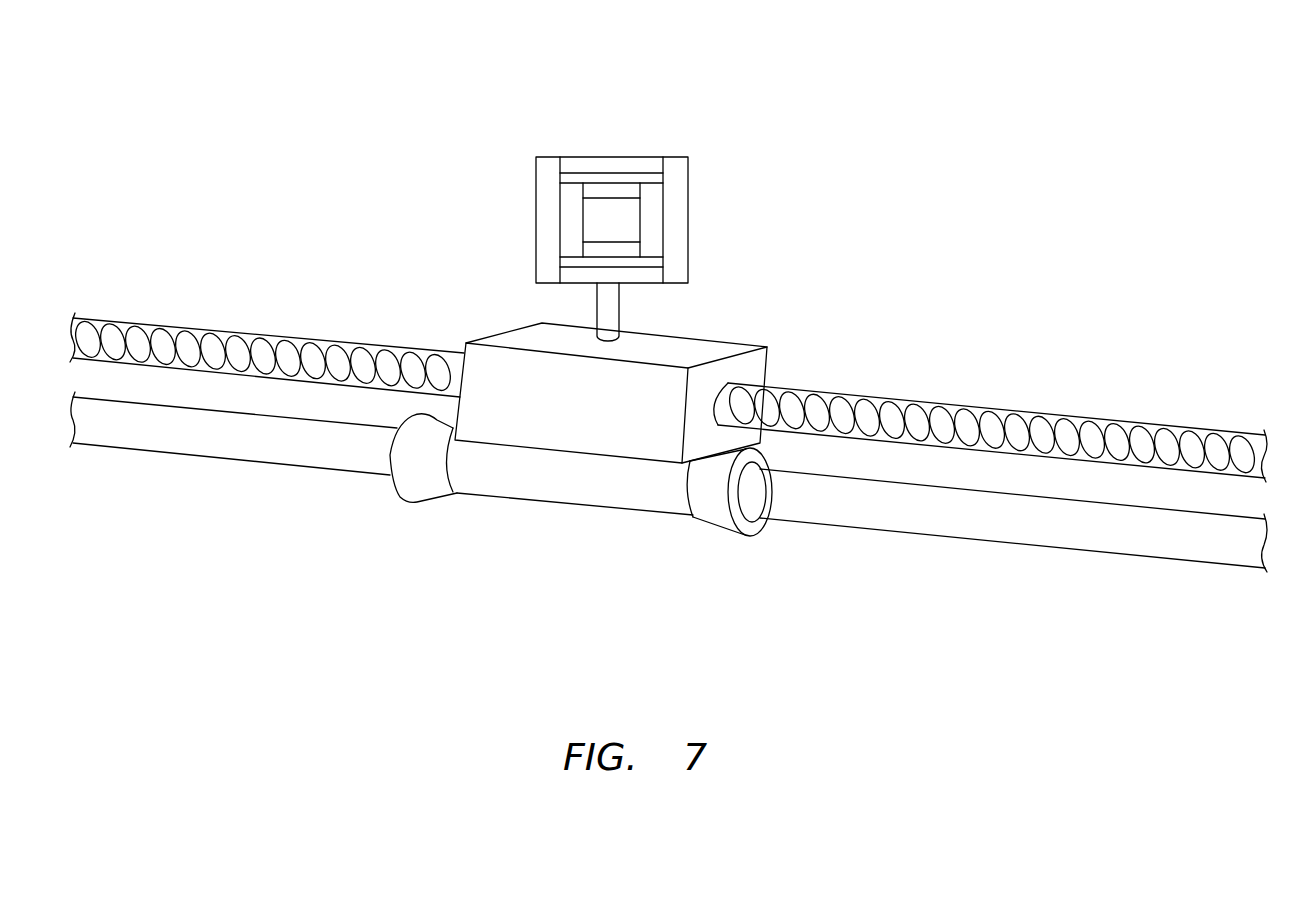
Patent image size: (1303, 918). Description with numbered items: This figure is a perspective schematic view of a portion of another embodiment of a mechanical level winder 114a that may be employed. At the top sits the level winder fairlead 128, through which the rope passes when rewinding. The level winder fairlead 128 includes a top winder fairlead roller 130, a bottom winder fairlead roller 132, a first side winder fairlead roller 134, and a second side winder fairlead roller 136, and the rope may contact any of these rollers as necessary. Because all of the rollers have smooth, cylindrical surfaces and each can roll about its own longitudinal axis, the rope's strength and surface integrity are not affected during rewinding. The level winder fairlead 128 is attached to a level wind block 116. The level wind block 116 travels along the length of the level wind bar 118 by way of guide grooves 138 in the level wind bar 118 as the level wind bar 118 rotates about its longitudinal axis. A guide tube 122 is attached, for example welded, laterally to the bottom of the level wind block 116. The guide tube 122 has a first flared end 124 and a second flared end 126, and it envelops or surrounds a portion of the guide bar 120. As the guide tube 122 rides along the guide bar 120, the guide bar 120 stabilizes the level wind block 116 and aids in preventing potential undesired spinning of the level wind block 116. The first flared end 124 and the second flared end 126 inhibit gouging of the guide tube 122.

The mechanical level winder 114a is at (390, 100).
The level wind block 116 is at (733, 340).
The level wind bar 118 is at (960, 407).
The guide bar 120 is at (968, 537).
The guide tube 122 is at (602, 508).
The first flared end 124 is at (425, 505).
The second flared end 126 is at (712, 530).
The level winder fairlead 128 is at (668, 123).
The top winder fairlead roller 130 is at (603, 182).
The bottom winder fairlead roller 132 is at (620, 257).
The first side winder fairlead roller 134 is at (559, 225).
The second side winder fairlead roller 136 is at (665, 222).
The guide grooves 138 is at (258, 336).